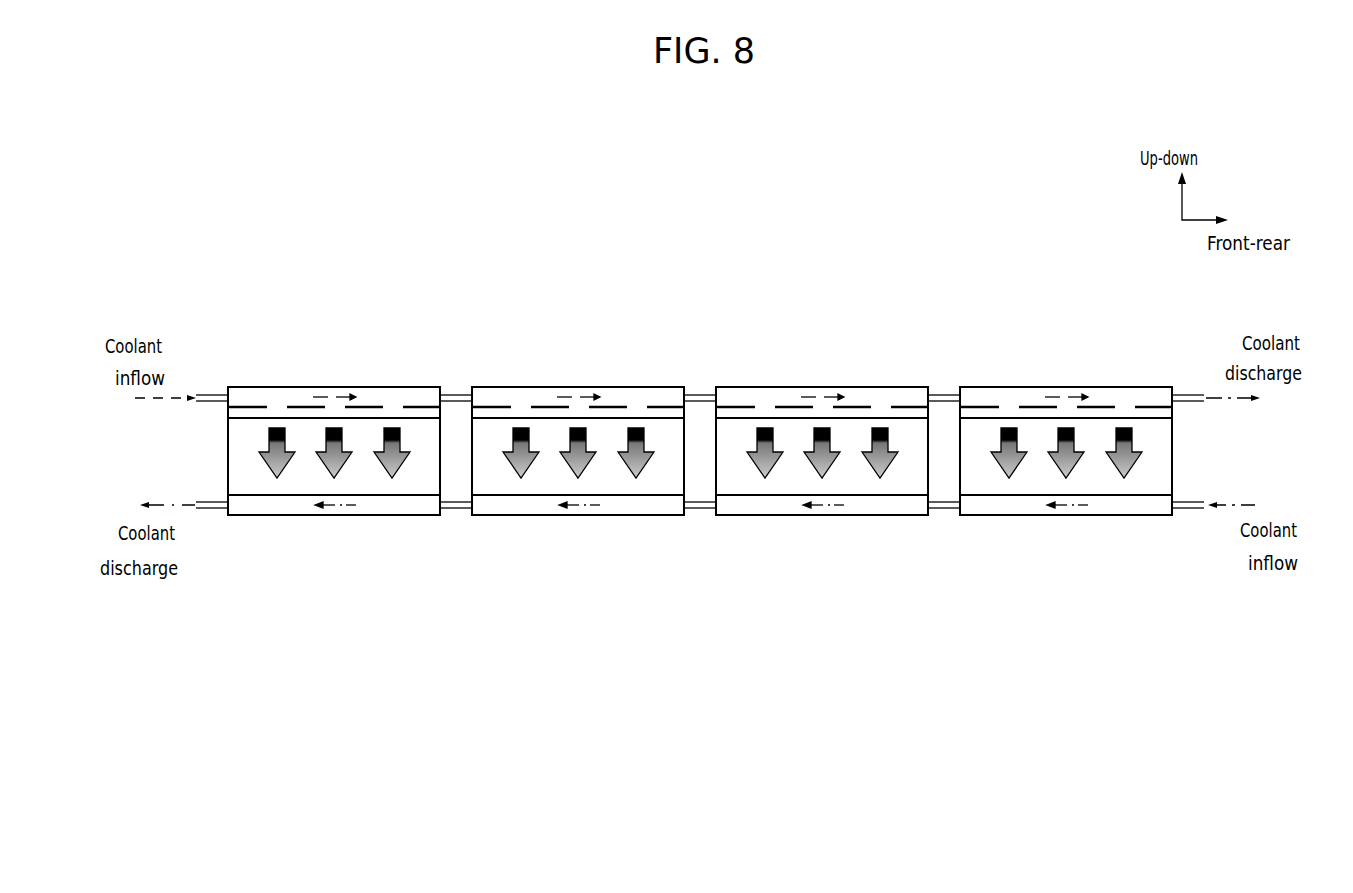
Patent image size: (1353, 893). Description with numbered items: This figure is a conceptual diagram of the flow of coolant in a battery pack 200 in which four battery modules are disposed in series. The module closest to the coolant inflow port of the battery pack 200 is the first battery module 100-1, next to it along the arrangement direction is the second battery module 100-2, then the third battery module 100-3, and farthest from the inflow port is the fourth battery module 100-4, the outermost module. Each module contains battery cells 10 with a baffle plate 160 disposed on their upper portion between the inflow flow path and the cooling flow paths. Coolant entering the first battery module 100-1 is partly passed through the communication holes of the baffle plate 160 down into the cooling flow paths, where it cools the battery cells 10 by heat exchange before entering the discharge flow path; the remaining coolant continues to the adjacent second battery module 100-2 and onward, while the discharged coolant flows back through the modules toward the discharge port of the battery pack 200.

The battery pack 200 is at (714, 220).
The first battery module 100-1 is at (308, 368).
The second battery module 100-2 is at (552, 368).
The third battery module 100-3 is at (796, 368).
The fourth battery module 100-4 is at (1040, 368).
The baffle plate 160 is at (378, 407).
The battery cell 10 is at (418, 483).